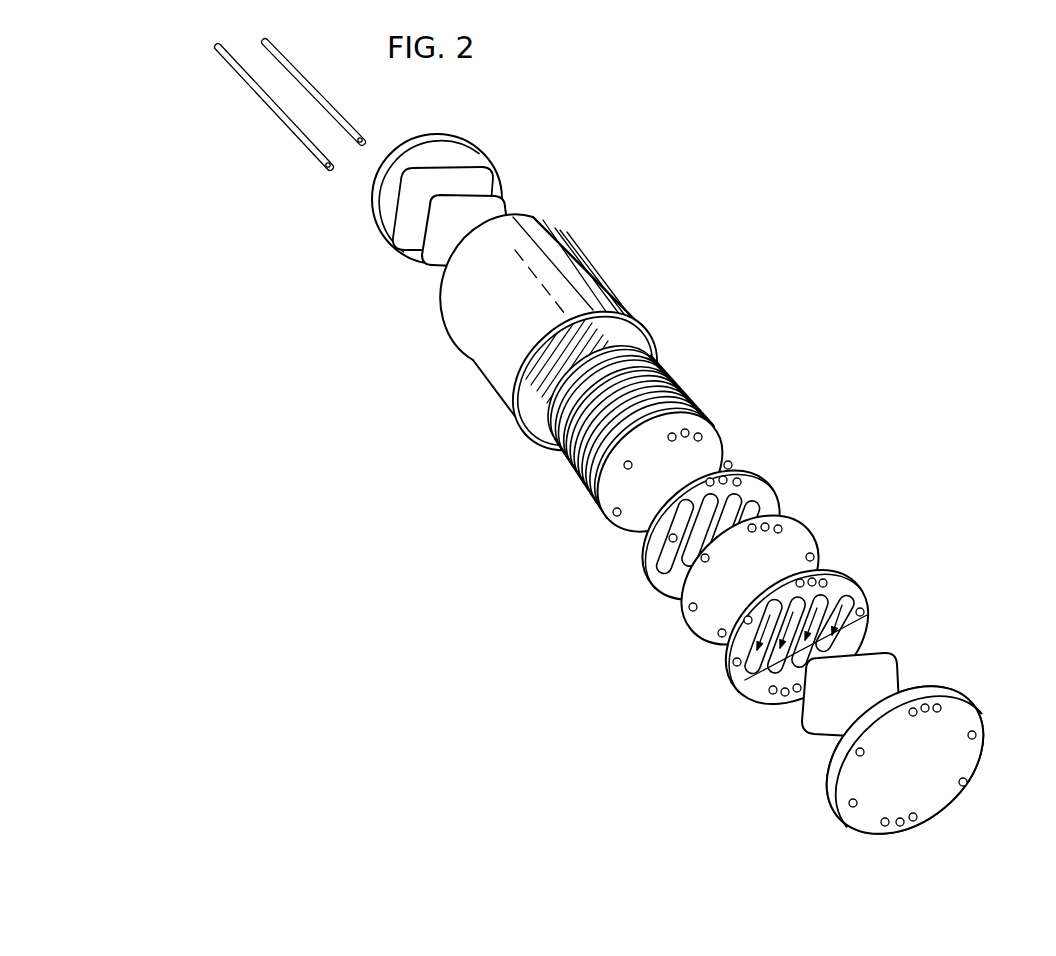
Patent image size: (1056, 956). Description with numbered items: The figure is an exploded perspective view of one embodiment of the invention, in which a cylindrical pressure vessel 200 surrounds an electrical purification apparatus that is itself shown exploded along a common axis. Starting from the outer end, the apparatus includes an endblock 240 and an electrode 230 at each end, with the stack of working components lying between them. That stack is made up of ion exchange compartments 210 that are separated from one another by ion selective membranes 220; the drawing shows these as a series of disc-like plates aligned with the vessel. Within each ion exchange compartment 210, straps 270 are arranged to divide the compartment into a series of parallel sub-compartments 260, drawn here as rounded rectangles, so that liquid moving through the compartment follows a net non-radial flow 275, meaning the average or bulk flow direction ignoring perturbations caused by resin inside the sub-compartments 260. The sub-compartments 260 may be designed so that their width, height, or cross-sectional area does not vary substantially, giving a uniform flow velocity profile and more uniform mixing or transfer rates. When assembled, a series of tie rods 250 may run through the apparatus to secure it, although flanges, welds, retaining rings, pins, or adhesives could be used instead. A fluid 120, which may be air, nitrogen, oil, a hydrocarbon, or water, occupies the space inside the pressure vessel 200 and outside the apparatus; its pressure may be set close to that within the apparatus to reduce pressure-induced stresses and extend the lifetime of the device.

The fluid 120 is at (647, 330).
The pressure vessel 200 is at (628, 270).
The ion exchange compartment 210 is at (722, 531).
The ion selective membrane 220 is at (738, 430).
The electrode 230 is at (520, 195).
The endblock 240 is at (503, 145).
The tie rods 250 is at (278, 134).
The sub-compartments 260 is at (673, 595).
The straps 270 is at (800, 648).
The net non-radial flow 275 is at (867, 615).